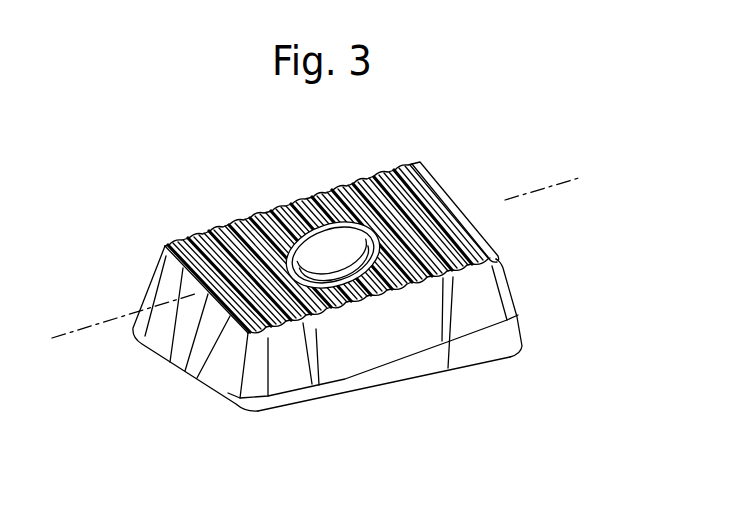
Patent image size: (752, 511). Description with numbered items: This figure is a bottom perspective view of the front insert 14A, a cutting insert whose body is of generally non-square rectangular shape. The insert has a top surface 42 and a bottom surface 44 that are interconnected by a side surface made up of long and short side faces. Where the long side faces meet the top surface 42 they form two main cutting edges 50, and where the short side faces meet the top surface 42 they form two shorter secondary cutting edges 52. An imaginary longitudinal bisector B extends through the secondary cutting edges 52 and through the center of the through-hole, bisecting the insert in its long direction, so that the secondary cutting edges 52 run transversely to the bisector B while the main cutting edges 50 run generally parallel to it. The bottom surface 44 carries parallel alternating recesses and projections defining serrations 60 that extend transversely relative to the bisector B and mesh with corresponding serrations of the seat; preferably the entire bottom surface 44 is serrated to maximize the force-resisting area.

The front insert 14A is at (327, 224).
The serrations 60 is at (246, 214).
The secondary cutting edges 52 is at (425, 178).
The bottom surface 44 is at (462, 204).
The top surface 42 is at (306, 402).
The main cutting edges 50 is at (488, 364).
The longitudinal bisector B is at (64, 334).